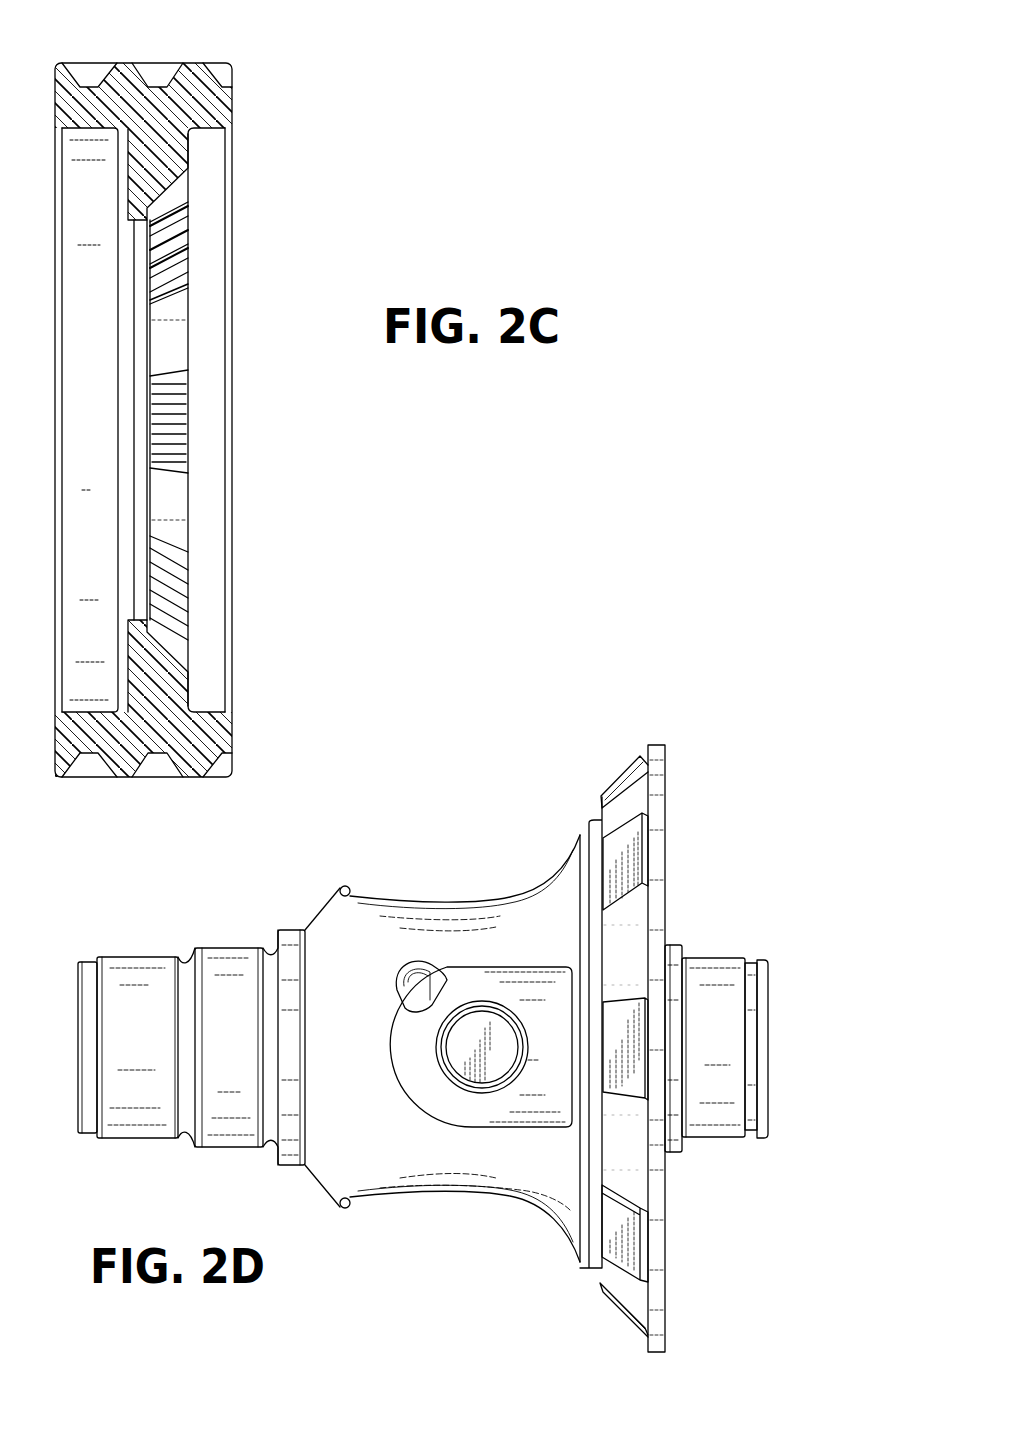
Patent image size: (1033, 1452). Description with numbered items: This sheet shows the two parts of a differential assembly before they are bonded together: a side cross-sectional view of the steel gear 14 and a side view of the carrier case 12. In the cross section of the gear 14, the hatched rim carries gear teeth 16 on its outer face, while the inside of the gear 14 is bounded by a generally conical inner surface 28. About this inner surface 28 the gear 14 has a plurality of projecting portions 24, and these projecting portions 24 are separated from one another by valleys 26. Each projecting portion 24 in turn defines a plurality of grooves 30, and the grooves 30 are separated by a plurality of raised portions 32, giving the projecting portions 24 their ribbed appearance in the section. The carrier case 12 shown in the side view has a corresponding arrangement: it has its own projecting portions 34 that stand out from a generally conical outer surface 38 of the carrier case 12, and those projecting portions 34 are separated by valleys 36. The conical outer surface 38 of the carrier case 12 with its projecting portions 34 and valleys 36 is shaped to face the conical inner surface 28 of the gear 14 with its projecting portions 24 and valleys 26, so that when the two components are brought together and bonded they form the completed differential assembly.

In FIG. 2D, the carrier case 12 is at (480, 829).
In FIG. 2C, the gear 14 is at (282, 232).
In FIG. 2C, the gear teeth 16 is at (118, 75).
In FIG. 2C, the projecting portions 24 is at (196, 242).
In FIG. 2C, the valleys 26 is at (172, 330).
In FIG. 2C, the conical inner surface 28 is at (160, 342).
In FIG. 2C, the grooves 30 is at (178, 242).
In FIG. 2C, the raised portions 32 is at (179, 217).
In FIG. 2D, the projecting portions 34 is at (608, 793).
In FIG. 2D, the valleys 36 is at (640, 790).
In FIG. 2D, the conical outer surface 38 is at (630, 755).